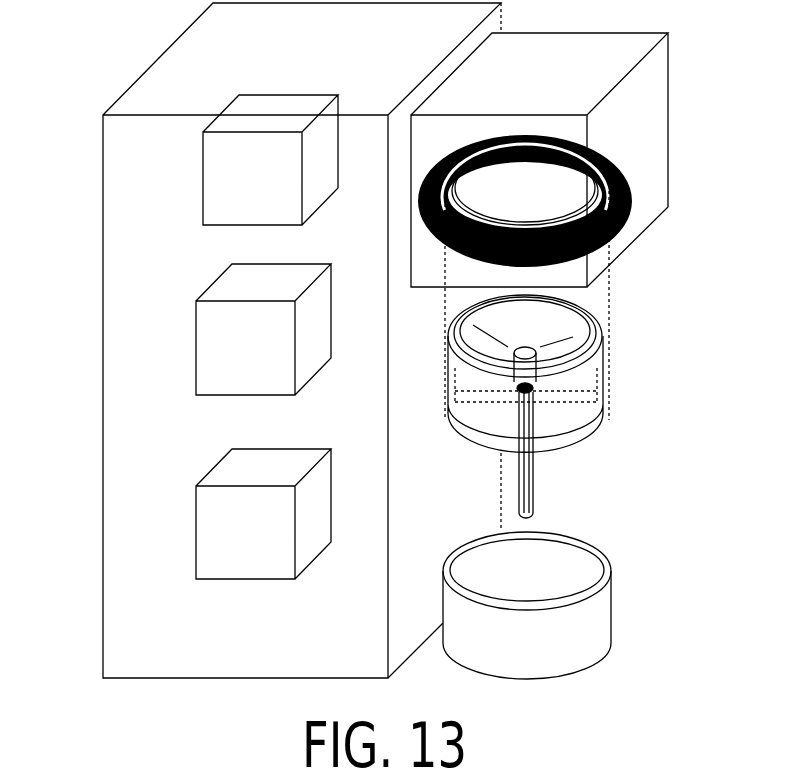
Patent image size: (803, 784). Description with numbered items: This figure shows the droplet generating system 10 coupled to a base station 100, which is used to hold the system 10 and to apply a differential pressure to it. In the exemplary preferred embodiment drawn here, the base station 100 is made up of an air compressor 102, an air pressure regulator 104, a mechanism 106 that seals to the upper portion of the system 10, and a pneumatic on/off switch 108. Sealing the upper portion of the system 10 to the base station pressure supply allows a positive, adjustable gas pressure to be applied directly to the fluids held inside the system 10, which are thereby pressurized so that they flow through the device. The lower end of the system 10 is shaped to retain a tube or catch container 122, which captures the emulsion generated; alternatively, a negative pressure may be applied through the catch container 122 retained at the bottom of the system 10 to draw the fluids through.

The base station 100 is at (120, 76).
The pneumatic on/off switch 108 is at (210, 182).
The air pressure regulator 104 is at (225, 353).
The air compressor 102 is at (215, 532).
The mechanism to seal to the upper portion of the system 106 is at (642, 178).
The system 10 is at (629, 352).
The catch container 122 is at (611, 618).